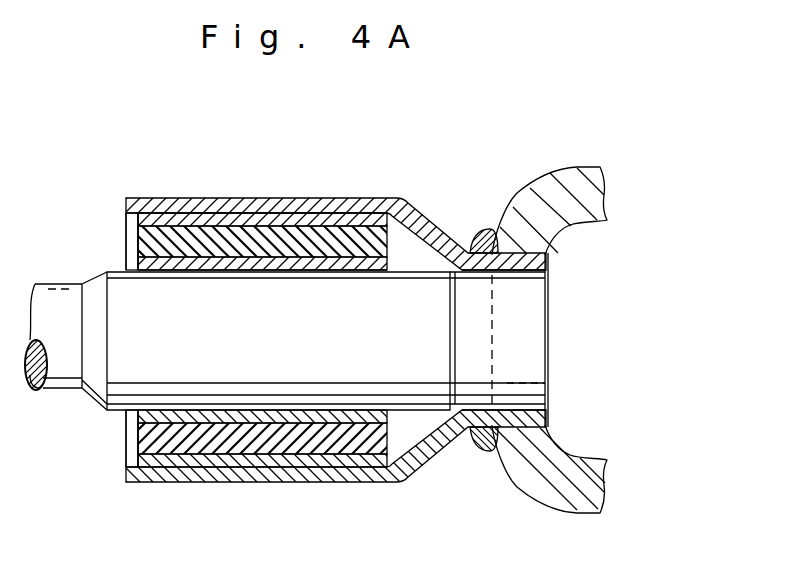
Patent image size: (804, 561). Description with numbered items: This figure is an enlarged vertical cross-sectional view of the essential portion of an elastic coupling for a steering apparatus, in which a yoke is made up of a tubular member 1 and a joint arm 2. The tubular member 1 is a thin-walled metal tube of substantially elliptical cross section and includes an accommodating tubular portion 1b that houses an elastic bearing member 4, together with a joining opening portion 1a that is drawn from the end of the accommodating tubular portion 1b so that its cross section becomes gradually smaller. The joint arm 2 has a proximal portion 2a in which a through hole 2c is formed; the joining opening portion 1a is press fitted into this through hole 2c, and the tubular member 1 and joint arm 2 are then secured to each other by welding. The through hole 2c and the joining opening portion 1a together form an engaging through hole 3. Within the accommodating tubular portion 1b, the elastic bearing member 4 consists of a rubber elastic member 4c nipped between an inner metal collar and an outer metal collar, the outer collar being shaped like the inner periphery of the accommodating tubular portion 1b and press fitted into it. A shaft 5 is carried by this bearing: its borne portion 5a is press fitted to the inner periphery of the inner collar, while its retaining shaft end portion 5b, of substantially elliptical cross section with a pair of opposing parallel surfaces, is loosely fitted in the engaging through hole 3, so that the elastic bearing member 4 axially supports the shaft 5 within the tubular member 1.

The tubular member 1 is at (241, 194).
The joining opening portion 1a is at (548, 262).
The accommodating tubular portion 1b is at (186, 199).
The joint arm 2 is at (552, 168).
The proximal portion 2a is at (548, 432).
The through hole 2c is at (548, 384).
The engaging through hole 3 is at (521, 290).
The elastic bearing member 4 is at (133, 433).
The elastic member 4c is at (137, 233).
The shaft 5 is at (64, 283).
The borne portion 5a is at (413, 307).
The retaining shaft end portion 5b is at (524, 359).